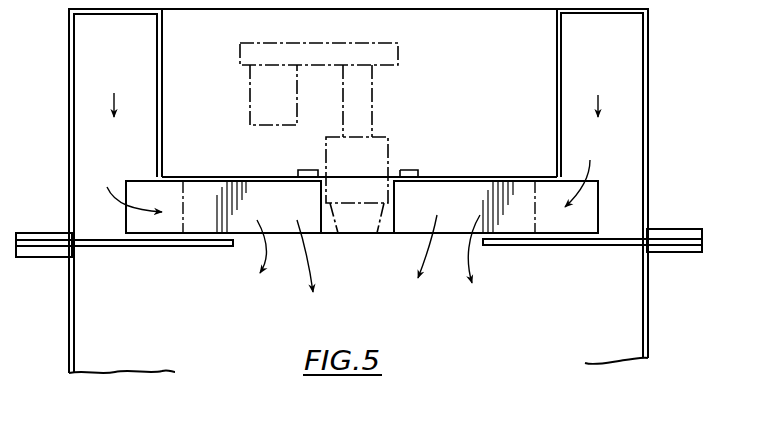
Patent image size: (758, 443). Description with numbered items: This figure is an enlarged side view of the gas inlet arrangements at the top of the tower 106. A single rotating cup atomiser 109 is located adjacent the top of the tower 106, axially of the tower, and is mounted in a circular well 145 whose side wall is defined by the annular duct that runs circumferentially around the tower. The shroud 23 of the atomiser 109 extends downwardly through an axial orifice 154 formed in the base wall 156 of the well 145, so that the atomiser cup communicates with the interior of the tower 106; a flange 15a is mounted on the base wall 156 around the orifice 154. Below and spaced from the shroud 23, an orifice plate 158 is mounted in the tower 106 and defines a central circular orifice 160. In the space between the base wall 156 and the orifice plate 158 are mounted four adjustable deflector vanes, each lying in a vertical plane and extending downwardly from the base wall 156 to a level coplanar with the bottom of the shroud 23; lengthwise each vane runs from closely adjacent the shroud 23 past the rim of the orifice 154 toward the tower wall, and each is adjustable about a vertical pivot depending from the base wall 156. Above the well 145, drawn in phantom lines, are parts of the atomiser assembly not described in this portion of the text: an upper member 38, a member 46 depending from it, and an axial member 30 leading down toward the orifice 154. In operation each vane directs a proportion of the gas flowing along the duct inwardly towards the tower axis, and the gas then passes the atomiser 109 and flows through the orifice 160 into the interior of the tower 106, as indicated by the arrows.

The tower 106 is at (73, 366).
The circular well 145 is at (547, 84).
The rotating cup atomiser 109 is at (510, 143).
The support plate 38 is at (384, 44).
The block 46 is at (297, 74).
The shaft 30 is at (372, 88).
The axial orifice 154 is at (398, 173).
The shroud 23 is at (389, 201).
The flange 15a is at (300, 170).
The base wall 156 is at (177, 178).
The orifice plate 158 is at (560, 222).
The central circular orifice 160 is at (485, 246).